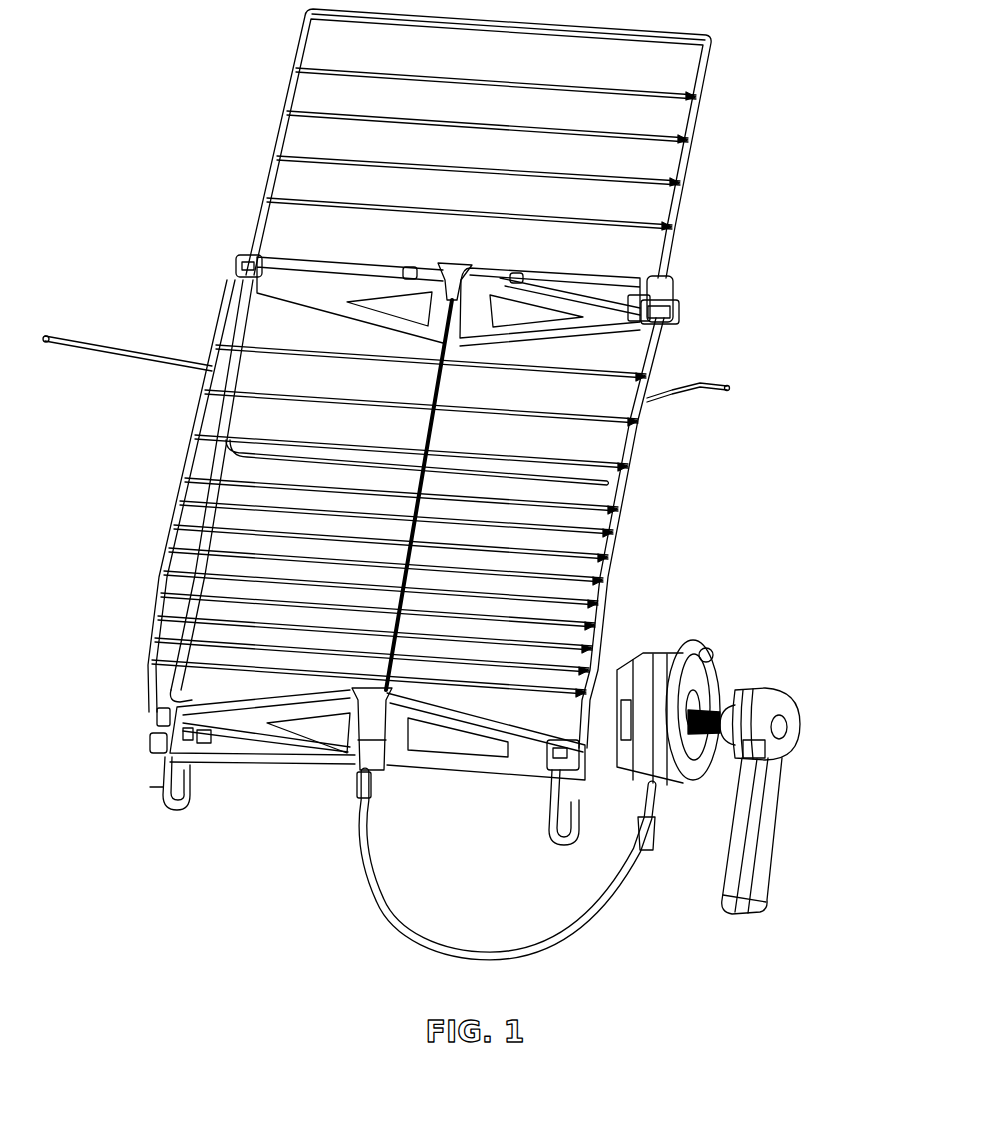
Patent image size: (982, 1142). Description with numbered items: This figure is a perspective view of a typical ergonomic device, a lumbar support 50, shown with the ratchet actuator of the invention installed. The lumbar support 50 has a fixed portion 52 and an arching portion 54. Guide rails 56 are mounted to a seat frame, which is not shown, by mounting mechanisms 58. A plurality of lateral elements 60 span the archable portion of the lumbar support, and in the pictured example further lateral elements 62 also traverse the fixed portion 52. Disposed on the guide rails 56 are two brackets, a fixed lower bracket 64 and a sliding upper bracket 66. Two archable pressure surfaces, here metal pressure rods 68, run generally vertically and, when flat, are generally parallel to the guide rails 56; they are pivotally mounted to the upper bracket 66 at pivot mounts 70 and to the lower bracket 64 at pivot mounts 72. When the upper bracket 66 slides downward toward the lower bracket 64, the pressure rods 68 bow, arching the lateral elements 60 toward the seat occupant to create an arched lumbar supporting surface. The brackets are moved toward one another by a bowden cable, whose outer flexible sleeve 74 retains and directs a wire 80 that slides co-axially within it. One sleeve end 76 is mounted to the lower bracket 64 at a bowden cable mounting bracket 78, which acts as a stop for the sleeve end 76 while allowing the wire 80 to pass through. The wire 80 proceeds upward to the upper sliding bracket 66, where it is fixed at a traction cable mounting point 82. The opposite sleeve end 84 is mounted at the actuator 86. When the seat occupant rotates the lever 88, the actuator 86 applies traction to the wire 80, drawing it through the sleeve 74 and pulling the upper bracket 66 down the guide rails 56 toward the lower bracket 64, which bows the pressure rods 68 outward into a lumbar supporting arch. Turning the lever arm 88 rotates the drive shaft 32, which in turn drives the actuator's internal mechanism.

The drive shaft 32 is at (713, 757).
The lumbar support 50 is at (149, 256).
The fixed portion 52 is at (240, 120).
The arching portion 54 is at (127, 483).
The guide rails 56 is at (700, 125).
The mounting mechanisms 58 is at (718, 385).
The lateral elements 60 is at (623, 516).
The lateral elements 62 is at (658, 100).
The fixed lower bracket 64 is at (247, 720).
The sliding upper bracket 66 is at (597, 317).
The archable pressure rods 68 is at (172, 505).
The pivot mounts 70 is at (678, 306).
The pivot mounts 72 is at (160, 730).
The bowden cable sleeve 74 is at (382, 900).
The bowden cable sleeve end 76 is at (373, 780).
The bowden cable mounting bracket 78 is at (347, 768).
The bowden cable wire 80 is at (598, 436).
The traction cable mounting point 82 is at (457, 283).
The bowden cable sleeve end 84 is at (643, 803).
The actuator 86 is at (766, 636).
The lever 88 is at (768, 830).